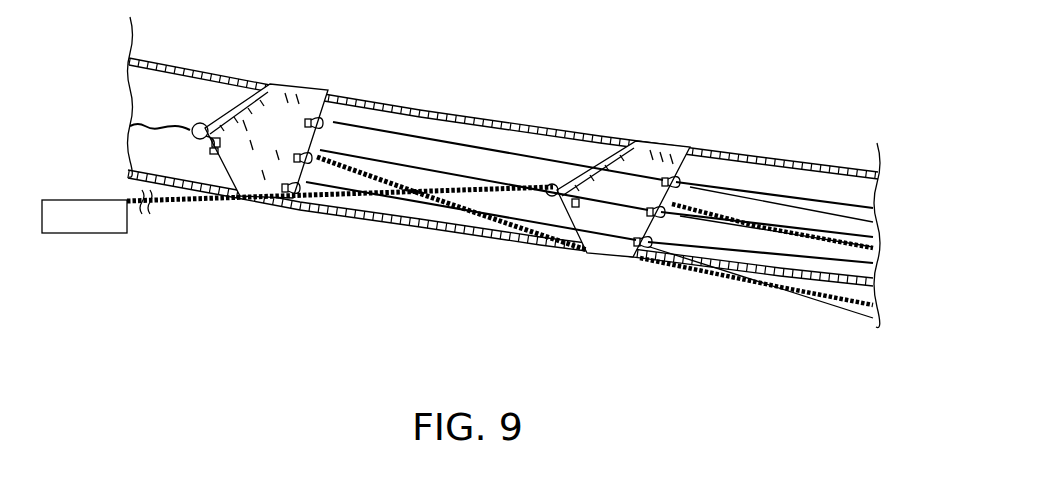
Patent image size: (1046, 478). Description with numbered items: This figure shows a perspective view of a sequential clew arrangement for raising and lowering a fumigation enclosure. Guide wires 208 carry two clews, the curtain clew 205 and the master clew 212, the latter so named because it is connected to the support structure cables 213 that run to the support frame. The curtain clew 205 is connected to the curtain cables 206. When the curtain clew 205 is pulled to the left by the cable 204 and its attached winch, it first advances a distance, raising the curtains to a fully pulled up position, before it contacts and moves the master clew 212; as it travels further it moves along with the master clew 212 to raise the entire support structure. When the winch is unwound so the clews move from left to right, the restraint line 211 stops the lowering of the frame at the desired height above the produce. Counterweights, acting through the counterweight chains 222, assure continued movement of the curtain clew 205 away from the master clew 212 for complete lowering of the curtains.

The cable 204 is at (297, 223).
The curtain clew 205 is at (608, 262).
The curtain cables 206 is at (880, 221).
The guide wires 208 is at (742, 152).
The restraint line 211 is at (130, 118).
The master clew 212 is at (323, 90).
The support structure cables 213 is at (404, 170).
The counterweight chains 222 is at (882, 244).